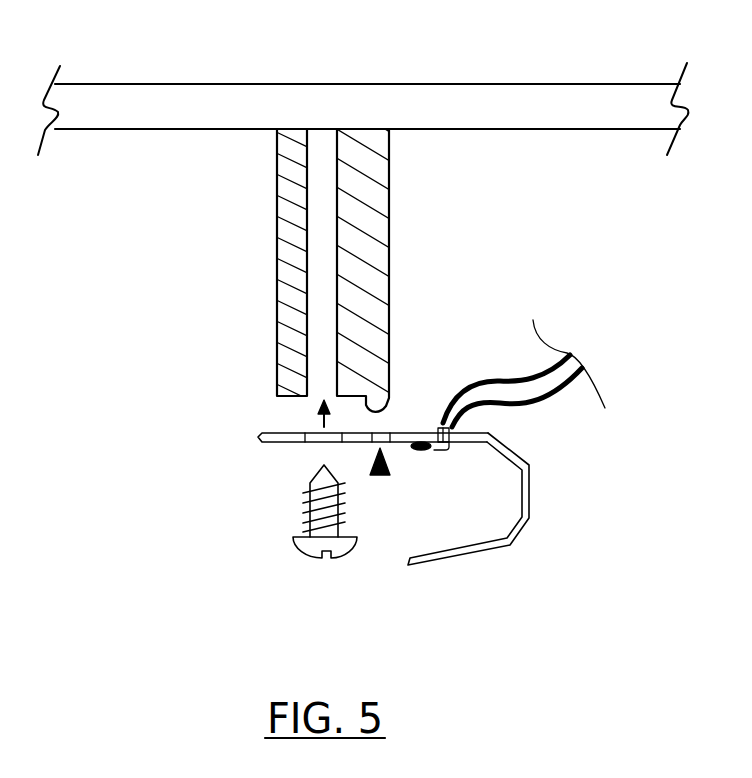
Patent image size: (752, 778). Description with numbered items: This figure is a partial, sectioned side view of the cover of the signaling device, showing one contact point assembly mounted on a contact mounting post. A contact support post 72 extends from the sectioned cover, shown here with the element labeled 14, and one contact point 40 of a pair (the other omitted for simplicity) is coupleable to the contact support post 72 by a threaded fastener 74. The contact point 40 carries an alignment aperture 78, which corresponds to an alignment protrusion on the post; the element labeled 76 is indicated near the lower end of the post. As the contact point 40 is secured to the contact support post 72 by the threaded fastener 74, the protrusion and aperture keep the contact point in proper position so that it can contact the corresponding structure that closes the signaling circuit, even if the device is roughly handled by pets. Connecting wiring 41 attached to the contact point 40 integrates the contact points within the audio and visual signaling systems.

The roof panel 14 is at (158, 84).
The contact support post 72 is at (390, 225).
The locating tab 76 is at (396, 403).
The alignment aperture 78 is at (380, 475).
The contact point 40 is at (529, 495).
The connecting wiring 41 is at (605, 354).
The threaded fastener 74 is at (296, 546).